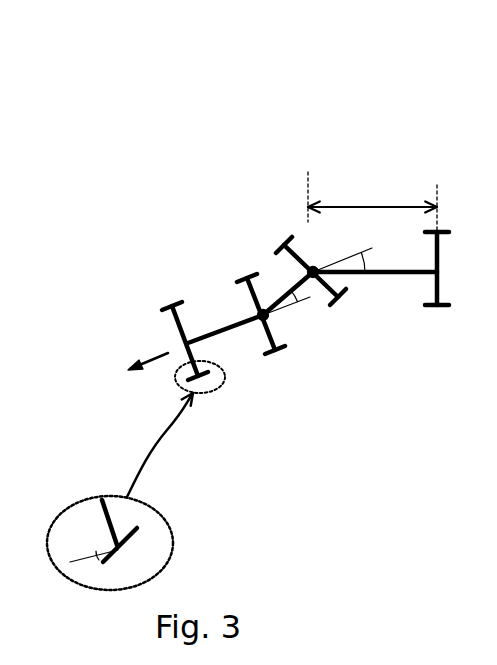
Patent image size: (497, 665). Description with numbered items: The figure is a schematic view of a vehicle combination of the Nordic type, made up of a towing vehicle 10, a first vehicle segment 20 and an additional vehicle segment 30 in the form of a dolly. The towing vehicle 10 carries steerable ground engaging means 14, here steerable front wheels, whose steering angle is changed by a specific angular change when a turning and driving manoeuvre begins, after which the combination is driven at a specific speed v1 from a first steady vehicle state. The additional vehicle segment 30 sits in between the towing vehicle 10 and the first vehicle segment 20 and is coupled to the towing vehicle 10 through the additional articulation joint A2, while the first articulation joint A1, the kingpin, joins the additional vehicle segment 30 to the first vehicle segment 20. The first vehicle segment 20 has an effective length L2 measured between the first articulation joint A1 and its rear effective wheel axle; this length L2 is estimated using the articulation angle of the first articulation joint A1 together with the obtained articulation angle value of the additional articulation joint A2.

The towing vehicle 10 is at (190, 253).
The steerable ground engaging means 14 is at (168, 285).
The first vehicle segment 20 is at (413, 165).
The additional vehicle segment 30 is at (280, 217).
The first articulation joint A1 is at (313, 258).
The additional articulation joint A2 is at (272, 295).
The effective length L2 is at (372, 197).
The specific speed v1 is at (142, 384).